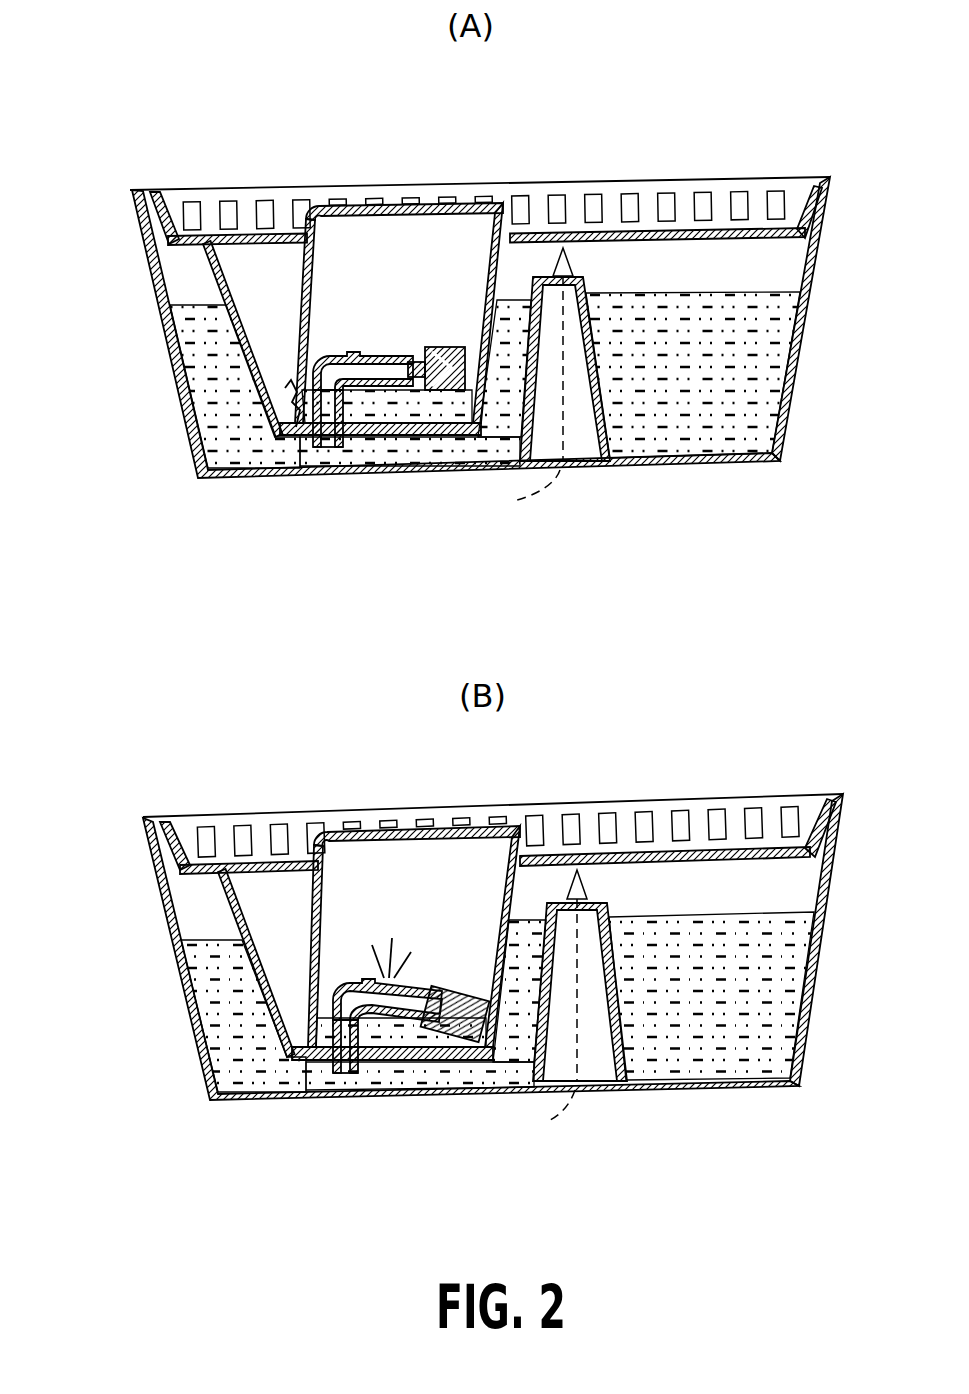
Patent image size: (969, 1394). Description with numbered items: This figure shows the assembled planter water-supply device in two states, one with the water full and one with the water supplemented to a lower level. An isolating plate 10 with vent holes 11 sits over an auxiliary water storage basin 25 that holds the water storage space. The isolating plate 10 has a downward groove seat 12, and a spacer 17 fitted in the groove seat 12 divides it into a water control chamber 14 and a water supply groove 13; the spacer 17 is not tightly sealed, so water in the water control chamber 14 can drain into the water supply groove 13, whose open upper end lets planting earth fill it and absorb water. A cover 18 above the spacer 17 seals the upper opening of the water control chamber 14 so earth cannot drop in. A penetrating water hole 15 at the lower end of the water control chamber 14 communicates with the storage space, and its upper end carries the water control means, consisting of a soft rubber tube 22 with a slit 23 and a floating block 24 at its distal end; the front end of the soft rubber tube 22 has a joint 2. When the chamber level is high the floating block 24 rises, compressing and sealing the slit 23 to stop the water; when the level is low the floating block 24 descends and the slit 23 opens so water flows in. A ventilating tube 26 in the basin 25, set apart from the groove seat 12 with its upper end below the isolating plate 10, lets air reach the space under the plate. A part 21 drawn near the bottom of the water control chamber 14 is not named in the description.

The nozzle 2 is at (413, 347).
The isolating plate 10 is at (770, 230).
The vent holes 11 is at (717, 233).
The groove seat 12 is at (193, 337).
The water supply groove 13 is at (247, 298).
The water control chamber 14 is at (357, 253).
The water hole 15 is at (317, 437).
The spacer 17 is at (300, 232).
The cover 18 is at (407, 210).
The float switch 21 is at (270, 380).
The soft rubber tube 22 is at (398, 1027).
The slit 23 is at (378, 353).
The floating block 24 is at (465, 345).
The auxiliary water storage basin 25 is at (800, 357).
The ventilating tube 26 is at (577, 443).